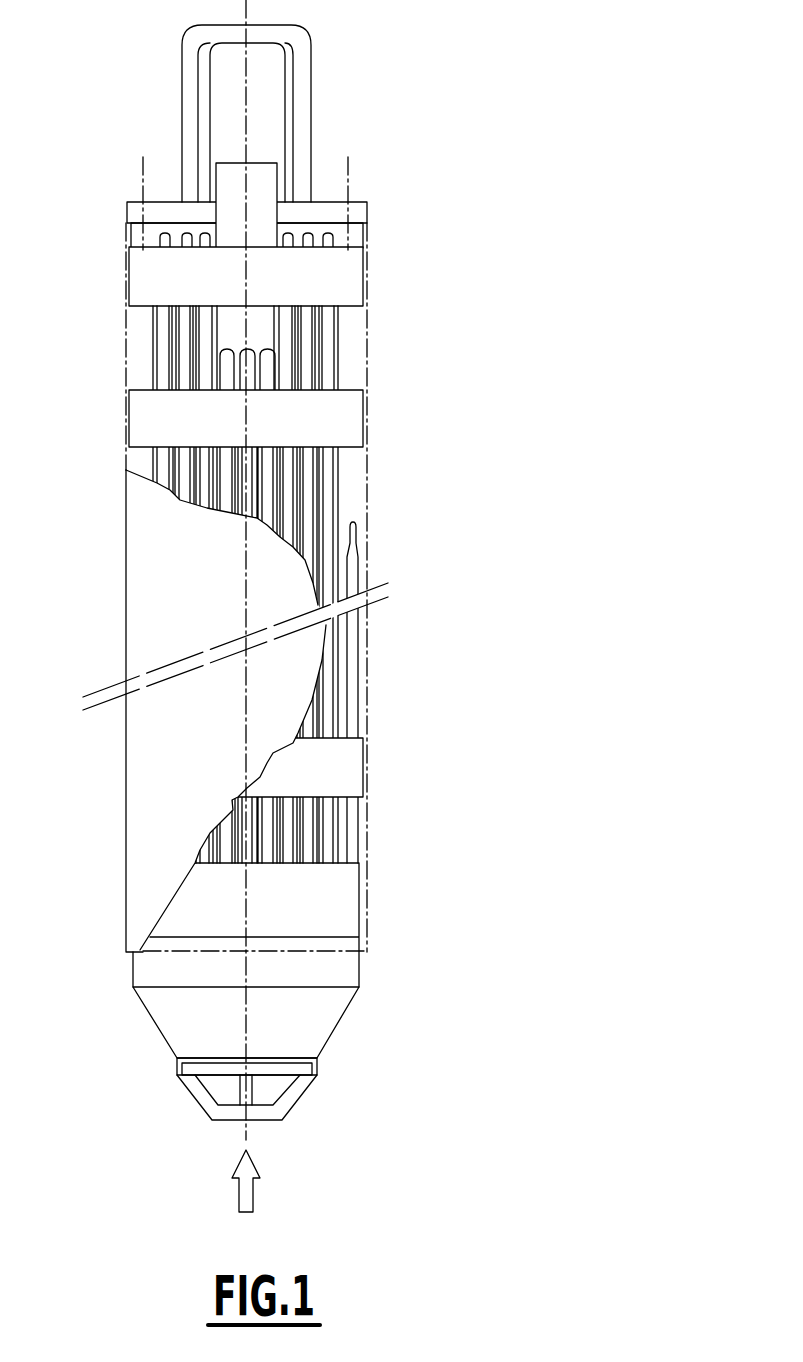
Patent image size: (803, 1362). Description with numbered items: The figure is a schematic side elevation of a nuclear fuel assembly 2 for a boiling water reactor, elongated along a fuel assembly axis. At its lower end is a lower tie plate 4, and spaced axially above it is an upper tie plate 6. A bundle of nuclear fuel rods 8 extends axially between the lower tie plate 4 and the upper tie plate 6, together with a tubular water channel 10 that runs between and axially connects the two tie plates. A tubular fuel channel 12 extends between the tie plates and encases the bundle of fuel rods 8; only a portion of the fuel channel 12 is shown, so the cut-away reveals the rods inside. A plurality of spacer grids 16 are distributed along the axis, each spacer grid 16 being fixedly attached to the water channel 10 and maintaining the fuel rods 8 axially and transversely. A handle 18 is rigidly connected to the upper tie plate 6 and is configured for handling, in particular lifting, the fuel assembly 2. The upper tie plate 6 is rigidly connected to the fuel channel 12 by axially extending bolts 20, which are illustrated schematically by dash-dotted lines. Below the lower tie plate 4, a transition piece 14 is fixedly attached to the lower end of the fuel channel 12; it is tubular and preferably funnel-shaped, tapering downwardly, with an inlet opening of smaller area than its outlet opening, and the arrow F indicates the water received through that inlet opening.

The nuclear fuel assembly 2 is at (345, 606).
The lower tie plate 4 is at (318, 897).
The upper tie plate 6 is at (346, 280).
The nuclear fuel rods 8 is at (308, 365).
The tubular water channel 10 is at (260, 332).
The tubular fuel channel 12 is at (145, 591).
The transition piece 14 is at (307, 1018).
The spacer grids 16 is at (334, 420).
The handle 18 is at (292, 68).
The bolts 20 is at (142, 170).
The arrow F is at (255, 1200).